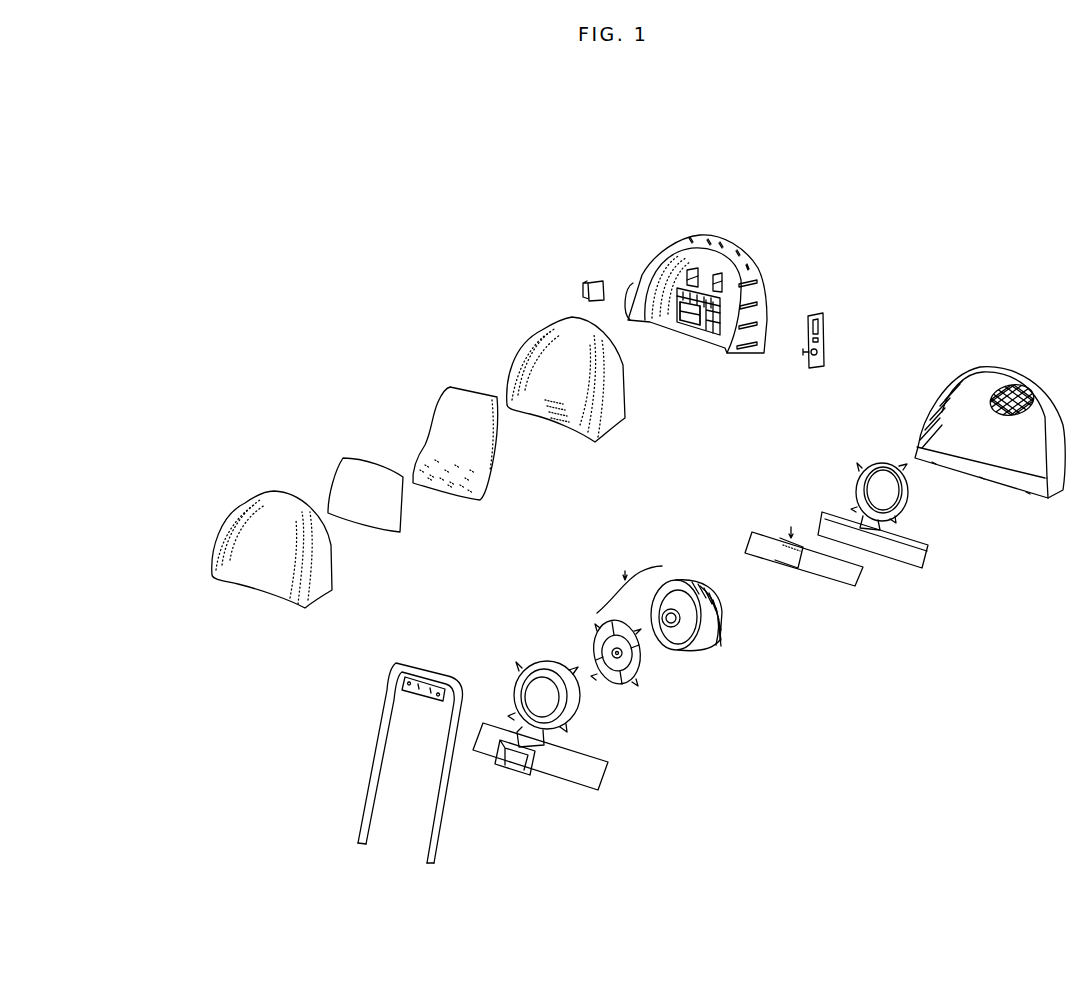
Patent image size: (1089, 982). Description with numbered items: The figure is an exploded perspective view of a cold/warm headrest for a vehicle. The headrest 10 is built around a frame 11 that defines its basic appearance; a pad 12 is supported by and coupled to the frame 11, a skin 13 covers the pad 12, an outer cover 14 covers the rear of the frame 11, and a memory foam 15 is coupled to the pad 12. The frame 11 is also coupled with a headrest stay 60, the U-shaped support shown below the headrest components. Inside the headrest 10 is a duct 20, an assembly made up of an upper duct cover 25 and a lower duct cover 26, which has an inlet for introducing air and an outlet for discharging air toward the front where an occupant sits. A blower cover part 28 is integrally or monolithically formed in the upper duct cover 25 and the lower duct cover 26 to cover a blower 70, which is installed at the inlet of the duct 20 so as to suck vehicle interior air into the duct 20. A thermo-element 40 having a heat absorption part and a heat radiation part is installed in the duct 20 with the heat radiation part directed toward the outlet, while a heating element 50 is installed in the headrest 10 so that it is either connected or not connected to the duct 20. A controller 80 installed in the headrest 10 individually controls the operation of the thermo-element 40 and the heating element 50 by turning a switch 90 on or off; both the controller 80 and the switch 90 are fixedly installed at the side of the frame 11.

The headrest 10 is at (770, 287).
The frame 11 is at (690, 237).
The pad 12 is at (533, 338).
The skin 13 is at (268, 502).
The outer cover 14 is at (1000, 373).
The memory foam 15 is at (455, 392).
The duct 20 is at (863, 581).
The upper duct cover 25 is at (593, 777).
The lower duct cover 26 is at (920, 557).
The blower cover part 28 is at (870, 463).
The thermo-element 40 is at (790, 565).
The heating element 50 is at (338, 467).
The headrest stay 60 is at (428, 670).
The blower 70 is at (633, 677).
The controller 80 is at (823, 348).
The switch 90 is at (581, 285).